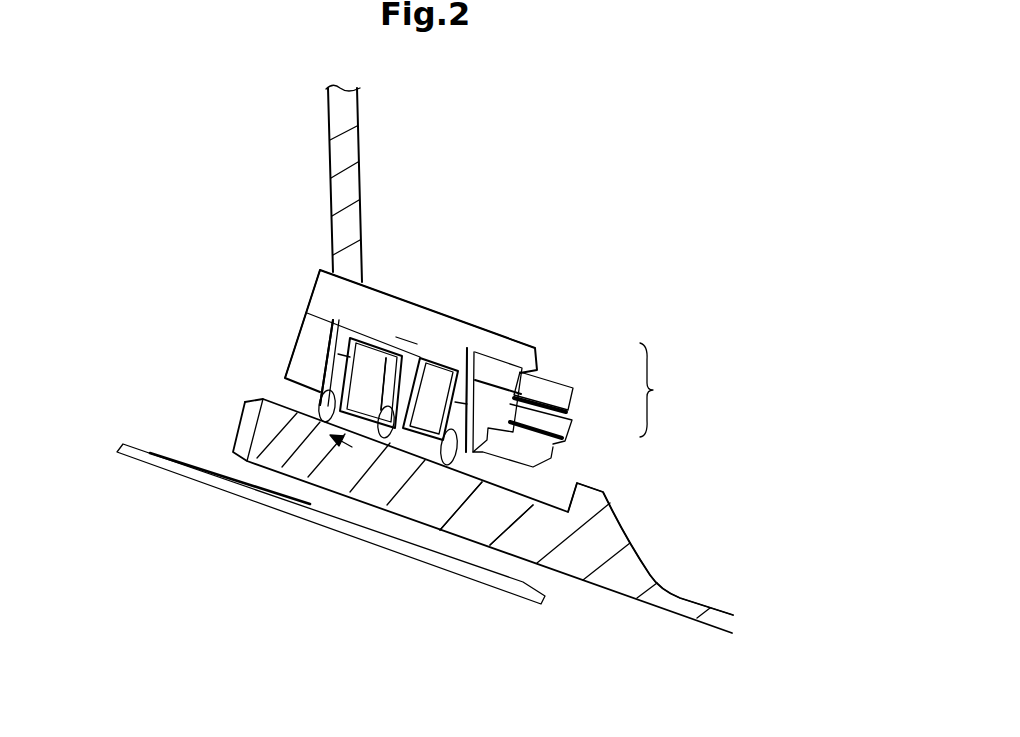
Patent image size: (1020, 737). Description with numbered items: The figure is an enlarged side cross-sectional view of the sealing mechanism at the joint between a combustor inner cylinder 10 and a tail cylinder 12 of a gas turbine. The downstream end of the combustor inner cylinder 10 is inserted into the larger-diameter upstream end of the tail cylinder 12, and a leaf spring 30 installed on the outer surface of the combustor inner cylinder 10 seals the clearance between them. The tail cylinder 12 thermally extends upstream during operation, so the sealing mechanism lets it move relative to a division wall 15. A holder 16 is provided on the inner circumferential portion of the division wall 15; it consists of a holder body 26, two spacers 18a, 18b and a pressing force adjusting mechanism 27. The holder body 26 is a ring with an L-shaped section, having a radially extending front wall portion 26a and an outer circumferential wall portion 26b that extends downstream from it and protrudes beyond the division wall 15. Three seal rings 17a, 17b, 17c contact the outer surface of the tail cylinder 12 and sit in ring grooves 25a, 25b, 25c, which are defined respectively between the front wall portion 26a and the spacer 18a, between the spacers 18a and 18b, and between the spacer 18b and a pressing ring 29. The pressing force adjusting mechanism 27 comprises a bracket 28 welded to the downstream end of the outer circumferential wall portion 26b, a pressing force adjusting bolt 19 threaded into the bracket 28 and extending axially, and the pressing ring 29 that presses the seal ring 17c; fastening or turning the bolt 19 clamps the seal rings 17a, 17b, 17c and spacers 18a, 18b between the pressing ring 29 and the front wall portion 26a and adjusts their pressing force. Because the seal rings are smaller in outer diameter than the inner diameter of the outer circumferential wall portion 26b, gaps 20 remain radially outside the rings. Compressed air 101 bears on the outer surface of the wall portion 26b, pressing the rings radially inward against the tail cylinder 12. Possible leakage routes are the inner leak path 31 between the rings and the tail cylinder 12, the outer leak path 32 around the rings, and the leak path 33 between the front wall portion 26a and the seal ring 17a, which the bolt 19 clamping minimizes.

The combustor inner cylinder 10 is at (160, 467).
The tail cylinder 12 is at (677, 617).
The division wall 15 is at (357, 152).
The holder 16 is at (567, 312).
The seal ring 17a is at (320, 412).
The seal ring 17b is at (385, 440).
The seal ring 17c is at (452, 465).
The spacer 18a is at (380, 336).
The spacer 18b is at (466, 378).
The pressing force adjusting bolt 19 is at (570, 425).
The gap 20 is at (349, 340).
The ring groove 25a is at (280, 415).
The ring groove 25b is at (385, 428).
The ring groove 25c is at (440, 435).
The holder body 26 is at (447, 313).
The front wall portion 26a is at (300, 322).
The outer circumferential wall portion 26b is at (400, 297).
The pressing force adjusting mechanism 27 is at (661, 390).
The bracket 28 is at (573, 390).
The pressing ring 29 is at (540, 375).
The leaf spring 30 is at (245, 472).
The leak path 31 is at (486, 513).
The leak path 32 is at (357, 320).
The leak path 33 is at (318, 385).
The compressed air 101 is at (534, 487).